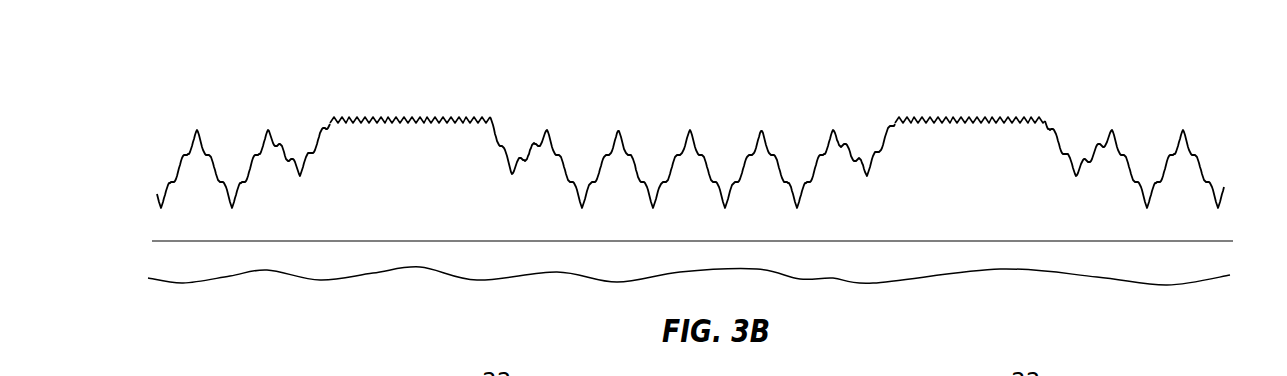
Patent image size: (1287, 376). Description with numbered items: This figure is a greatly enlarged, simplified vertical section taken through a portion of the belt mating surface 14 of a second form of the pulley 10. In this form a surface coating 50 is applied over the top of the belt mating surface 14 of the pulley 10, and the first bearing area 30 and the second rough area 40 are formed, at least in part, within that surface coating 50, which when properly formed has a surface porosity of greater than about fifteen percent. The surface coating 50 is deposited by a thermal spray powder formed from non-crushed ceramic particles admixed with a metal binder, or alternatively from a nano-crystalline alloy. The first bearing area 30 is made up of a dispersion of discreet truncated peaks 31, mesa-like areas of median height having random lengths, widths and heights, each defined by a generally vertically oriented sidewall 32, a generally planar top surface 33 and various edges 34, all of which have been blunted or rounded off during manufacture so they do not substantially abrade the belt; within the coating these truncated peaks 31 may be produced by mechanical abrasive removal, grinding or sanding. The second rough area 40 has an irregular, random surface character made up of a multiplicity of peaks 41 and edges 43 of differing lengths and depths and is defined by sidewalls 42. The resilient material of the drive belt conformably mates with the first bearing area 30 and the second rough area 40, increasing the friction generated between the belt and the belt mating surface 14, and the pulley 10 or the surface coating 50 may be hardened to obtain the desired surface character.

The pulley 10 is at (618, 263).
The belt mating surface 14 is at (583, 140).
The first bearing area 30 is at (421, 118).
The truncated peaks 31 is at (492, 127).
The sidewall 32 is at (304, 150).
The top surface 33 is at (1045, 118).
The edges 34 is at (495, 128).
The second rough area 40 is at (770, 110).
The peaks 41 is at (687, 130).
The sidewalls 42 is at (782, 172).
The edges 43 is at (703, 150).
The surface coating 50 is at (492, 231).